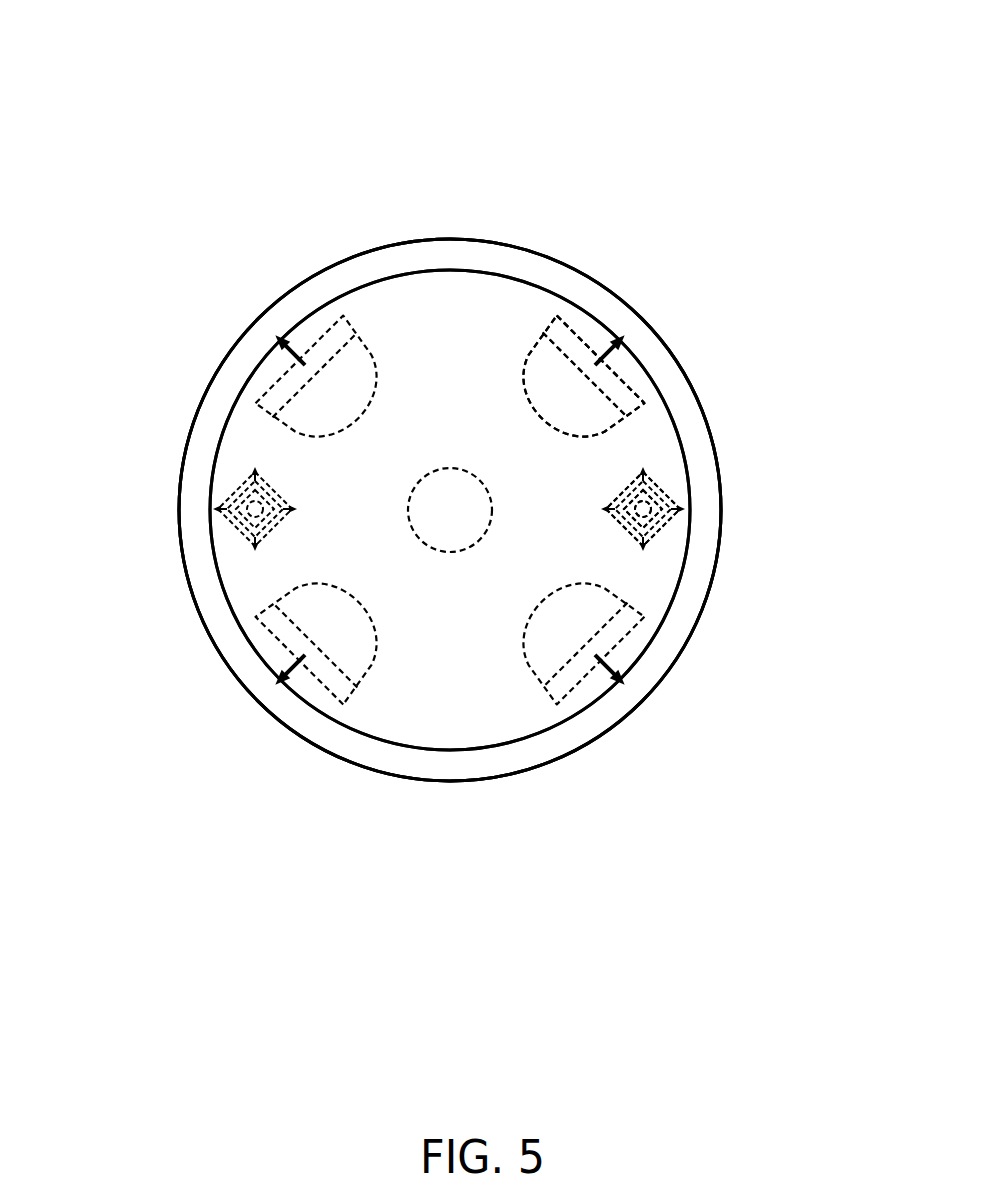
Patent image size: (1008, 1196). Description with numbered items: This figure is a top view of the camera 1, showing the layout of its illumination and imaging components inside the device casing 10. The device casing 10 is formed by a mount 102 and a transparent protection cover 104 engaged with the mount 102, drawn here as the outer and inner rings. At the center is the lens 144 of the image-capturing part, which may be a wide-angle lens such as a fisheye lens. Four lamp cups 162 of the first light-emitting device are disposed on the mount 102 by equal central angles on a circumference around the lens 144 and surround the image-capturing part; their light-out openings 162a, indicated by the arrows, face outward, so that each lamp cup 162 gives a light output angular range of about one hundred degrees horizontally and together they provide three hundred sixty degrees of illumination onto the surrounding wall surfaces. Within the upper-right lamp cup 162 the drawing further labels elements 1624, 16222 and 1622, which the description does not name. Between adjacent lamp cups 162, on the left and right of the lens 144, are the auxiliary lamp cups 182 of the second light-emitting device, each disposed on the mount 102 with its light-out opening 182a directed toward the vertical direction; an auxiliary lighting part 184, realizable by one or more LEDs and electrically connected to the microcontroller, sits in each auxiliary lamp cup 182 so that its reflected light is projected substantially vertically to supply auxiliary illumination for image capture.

The camera 1 is at (621, 77).
The device casing 10 is at (92, 342).
The mount 102 is at (190, 500).
The transparent protection cover 104 is at (242, 418).
The lens 144 is at (433, 542).
The lamp cup 162 is at (596, 336).
The light-out opening 162a is at (609, 381).
The magnet body 1624 is at (550, 357).
The magnetic pole face 16222 is at (635, 403).
The magnetic pole 1622 is at (585, 375).
The auxiliary lamp cup 182 is at (665, 525).
The light-out opening 182a is at (656, 484).
The auxiliary lighting part 184 is at (652, 503).